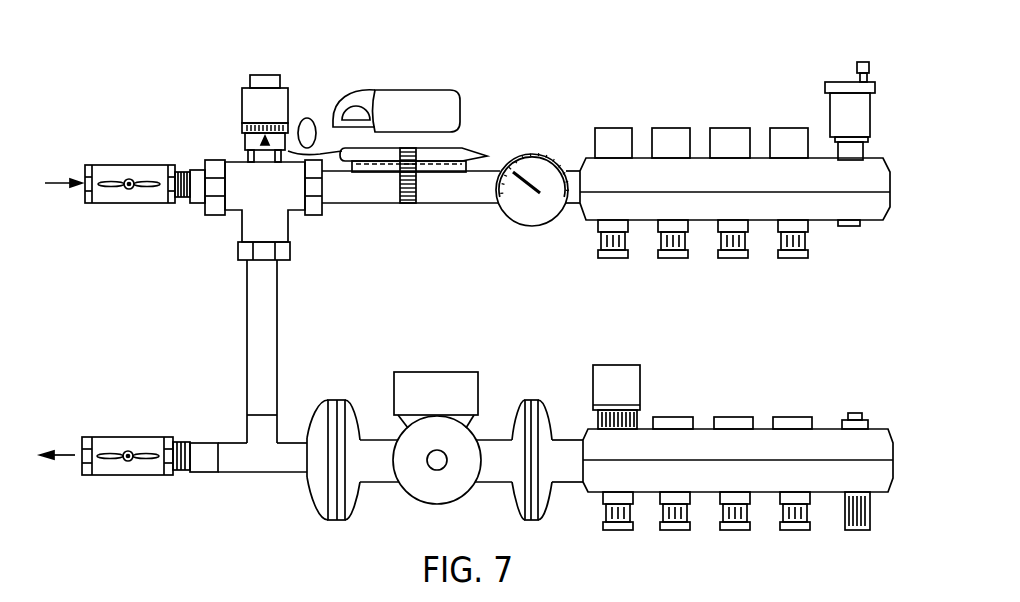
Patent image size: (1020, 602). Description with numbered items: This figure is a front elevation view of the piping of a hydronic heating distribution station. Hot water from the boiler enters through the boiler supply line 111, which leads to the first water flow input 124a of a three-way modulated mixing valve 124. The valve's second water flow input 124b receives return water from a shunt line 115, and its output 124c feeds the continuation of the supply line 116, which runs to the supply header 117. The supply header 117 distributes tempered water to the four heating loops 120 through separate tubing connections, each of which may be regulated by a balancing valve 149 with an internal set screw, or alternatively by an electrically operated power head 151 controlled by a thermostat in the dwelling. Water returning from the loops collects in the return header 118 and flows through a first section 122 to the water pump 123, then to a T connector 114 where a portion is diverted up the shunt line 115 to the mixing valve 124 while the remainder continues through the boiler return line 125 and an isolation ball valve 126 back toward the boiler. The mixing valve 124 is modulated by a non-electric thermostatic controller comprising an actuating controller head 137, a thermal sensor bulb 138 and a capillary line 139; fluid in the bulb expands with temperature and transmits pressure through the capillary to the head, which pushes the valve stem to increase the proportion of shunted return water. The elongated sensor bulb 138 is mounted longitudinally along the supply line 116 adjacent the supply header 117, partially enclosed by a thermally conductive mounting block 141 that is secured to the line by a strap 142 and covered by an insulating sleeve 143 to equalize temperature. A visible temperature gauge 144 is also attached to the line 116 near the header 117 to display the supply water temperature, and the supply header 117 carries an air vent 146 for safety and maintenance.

The boiler supply line 111 is at (58, 186).
The T connector 114 is at (258, 473).
The shunt line 115 is at (279, 333).
The continuation of supply line 116 is at (368, 190).
The supply header 117 is at (873, 222).
The return header 118 is at (882, 428).
The heating loops 120 is at (802, 313).
The first section of return line 122 is at (560, 438).
The water pump 123 is at (478, 386).
The three-way modulated mixing valve 124 is at (178, 91).
The first water flow input 124a is at (220, 152).
The second water flow input 124b is at (230, 234).
The valve output 124c is at (295, 232).
The boiler return line 125 is at (66, 452).
The isolation ball valve 126 is at (122, 478).
The actuating controller head 137 is at (288, 88).
The thermal sensor bulb 138 is at (462, 150).
The capillary line 139 is at (307, 118).
The mounting block 141 is at (474, 172).
The strap 142 is at (410, 204).
The insulating sleeve 143 is at (375, 92).
The temperature gauge 144 is at (540, 155).
The air vent 146 is at (845, 100).
The balancing valves 149 is at (608, 128).
The electrically operated power head 151 is at (640, 382).